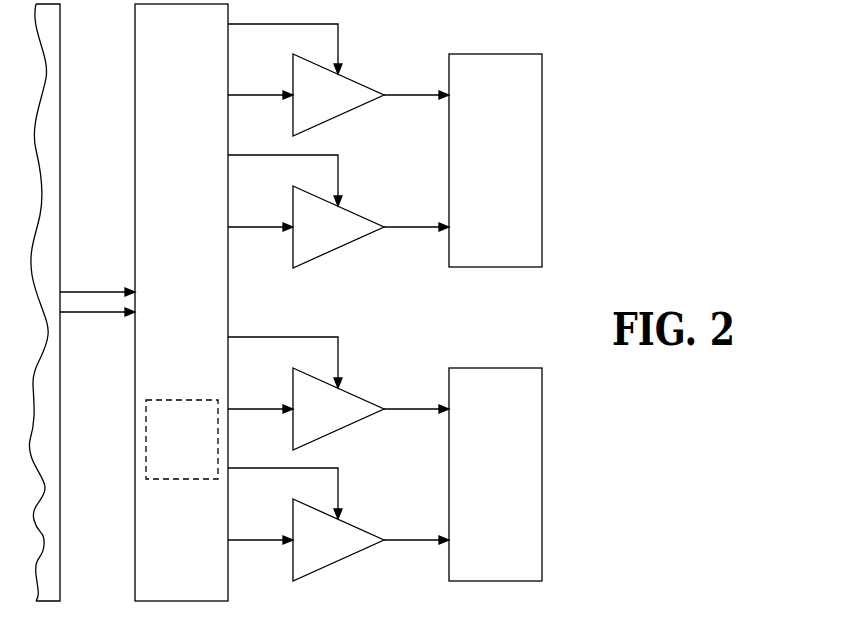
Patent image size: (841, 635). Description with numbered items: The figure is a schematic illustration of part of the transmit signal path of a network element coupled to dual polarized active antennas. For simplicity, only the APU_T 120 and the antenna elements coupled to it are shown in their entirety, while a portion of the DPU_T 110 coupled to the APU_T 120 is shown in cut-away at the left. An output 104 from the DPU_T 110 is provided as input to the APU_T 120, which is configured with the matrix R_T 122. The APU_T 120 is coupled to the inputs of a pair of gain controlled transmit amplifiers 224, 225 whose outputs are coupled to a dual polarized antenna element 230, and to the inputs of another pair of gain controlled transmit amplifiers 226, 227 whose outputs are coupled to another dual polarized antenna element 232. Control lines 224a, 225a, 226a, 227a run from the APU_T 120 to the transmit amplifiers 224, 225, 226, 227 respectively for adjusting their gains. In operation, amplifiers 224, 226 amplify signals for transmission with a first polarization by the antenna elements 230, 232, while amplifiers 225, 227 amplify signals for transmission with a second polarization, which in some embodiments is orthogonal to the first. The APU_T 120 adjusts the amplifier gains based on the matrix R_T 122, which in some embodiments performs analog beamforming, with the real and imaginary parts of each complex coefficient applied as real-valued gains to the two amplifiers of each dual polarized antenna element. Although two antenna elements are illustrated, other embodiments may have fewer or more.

The DPU_T 110 is at (60, 82).
The output 104 is at (97, 289).
The APU_T 120 is at (203, 326).
The matrix R_T 122 is at (203, 467).
The gain controlled transmit amplifier 224 is at (342, 107).
The control line 224a is at (338, 40).
The gain controlled transmit amplifier 225 is at (342, 239).
The control line 225a is at (338, 172).
The gain controlled transmit amplifier 226 is at (342, 421).
The control line 226a is at (338, 353).
The gain controlled transmit amplifier 227 is at (342, 552).
The control line 227a is at (338, 484).
The dual polarized antenna element 230 is at (518, 173).
The dual polarized antenna element 232 is at (518, 487).